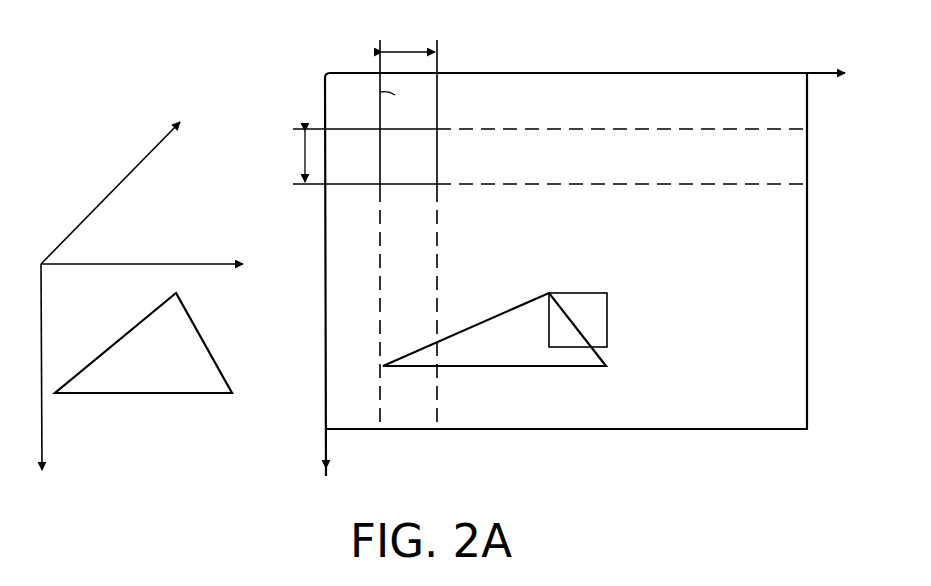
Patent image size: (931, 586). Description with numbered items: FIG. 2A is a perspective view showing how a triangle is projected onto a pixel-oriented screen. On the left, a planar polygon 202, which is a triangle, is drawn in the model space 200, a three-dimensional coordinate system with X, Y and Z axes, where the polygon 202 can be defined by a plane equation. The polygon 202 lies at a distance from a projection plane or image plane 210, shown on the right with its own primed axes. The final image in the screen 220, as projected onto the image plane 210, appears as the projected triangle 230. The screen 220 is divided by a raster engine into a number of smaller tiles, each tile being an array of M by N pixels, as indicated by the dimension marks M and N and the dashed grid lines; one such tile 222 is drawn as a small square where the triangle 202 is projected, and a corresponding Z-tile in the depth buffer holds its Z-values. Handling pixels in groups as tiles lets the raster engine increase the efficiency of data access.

The model space 200 is at (48, 246).
The planar polygon 202 is at (144, 394).
The image plane 210 is at (578, 68).
The screen 220 is at (680, 430).
The tile 222 is at (587, 292).
The projected image of polygon 230 is at (492, 367).